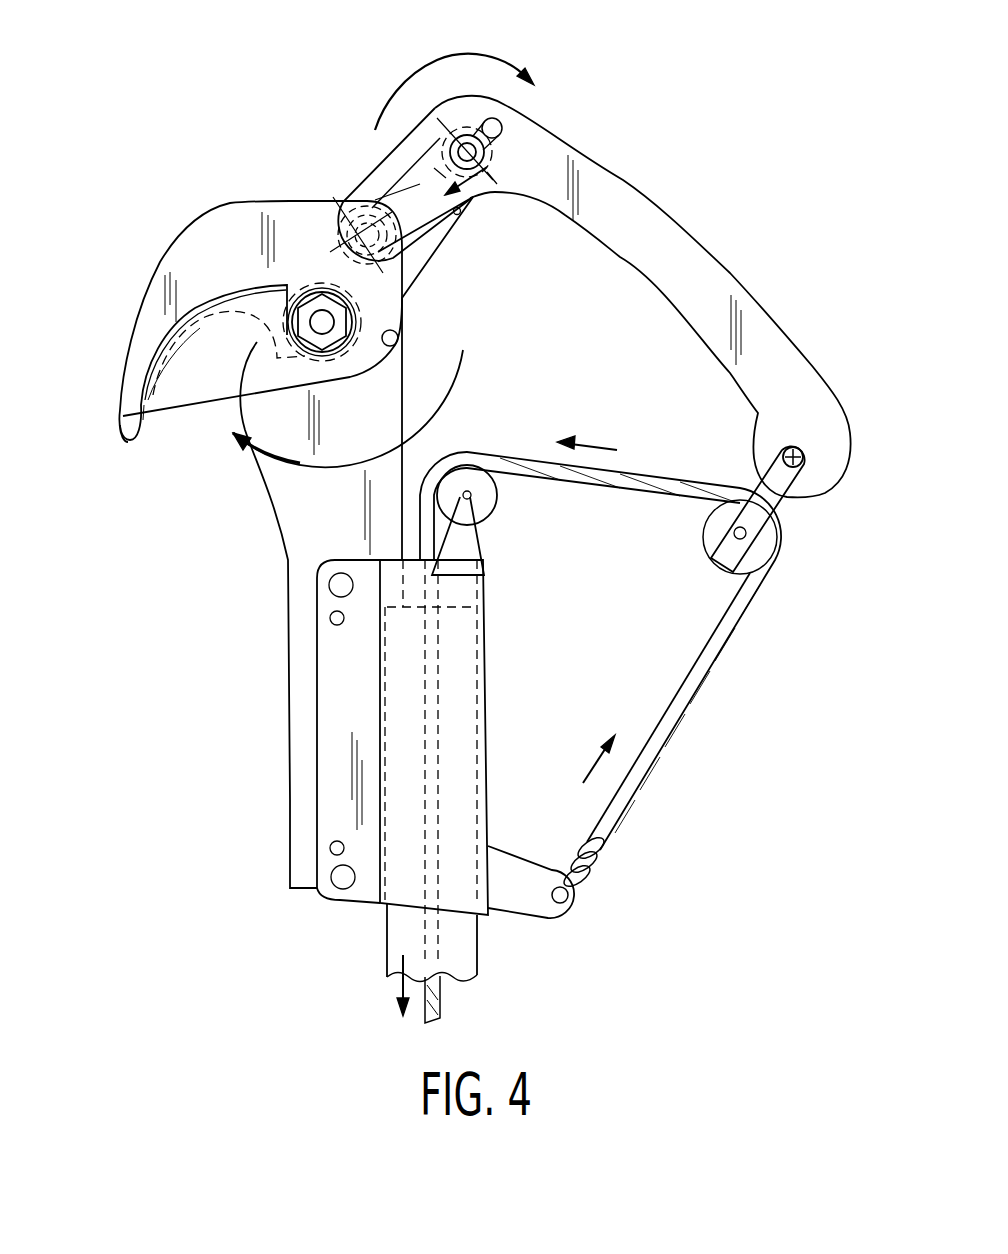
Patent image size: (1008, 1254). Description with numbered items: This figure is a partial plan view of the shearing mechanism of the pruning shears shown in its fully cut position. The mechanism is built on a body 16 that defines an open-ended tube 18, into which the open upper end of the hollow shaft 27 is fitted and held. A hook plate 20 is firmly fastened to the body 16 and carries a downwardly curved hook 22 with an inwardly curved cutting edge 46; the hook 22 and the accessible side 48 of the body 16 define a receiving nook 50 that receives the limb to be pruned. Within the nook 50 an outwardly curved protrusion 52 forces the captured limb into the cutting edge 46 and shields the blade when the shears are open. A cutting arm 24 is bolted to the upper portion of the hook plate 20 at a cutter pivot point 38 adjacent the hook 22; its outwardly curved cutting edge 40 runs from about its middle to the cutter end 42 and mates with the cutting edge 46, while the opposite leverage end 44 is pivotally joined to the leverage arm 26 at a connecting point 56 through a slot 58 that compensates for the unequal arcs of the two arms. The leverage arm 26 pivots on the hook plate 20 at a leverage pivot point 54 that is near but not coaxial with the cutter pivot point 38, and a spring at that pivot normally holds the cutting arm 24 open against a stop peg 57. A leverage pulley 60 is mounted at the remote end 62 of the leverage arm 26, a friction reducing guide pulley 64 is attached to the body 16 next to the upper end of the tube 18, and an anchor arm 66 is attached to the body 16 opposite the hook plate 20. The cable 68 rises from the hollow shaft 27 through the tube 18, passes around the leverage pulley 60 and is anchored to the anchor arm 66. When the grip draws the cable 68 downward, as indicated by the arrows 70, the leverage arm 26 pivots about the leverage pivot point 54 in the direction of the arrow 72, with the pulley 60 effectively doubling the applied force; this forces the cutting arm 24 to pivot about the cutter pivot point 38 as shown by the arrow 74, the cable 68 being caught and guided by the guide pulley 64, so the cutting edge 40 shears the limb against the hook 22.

The body 16 is at (327, 695).
The tube 18 is at (470, 687).
The hook plate 20 is at (303, 835).
The hook 22 is at (221, 279).
The cutting arm 24 is at (221, 386).
The leverage arm 26 is at (653, 203).
The hollow shaft 27 is at (387, 937).
The cutter pivot point 38 is at (340, 312).
The cutting edge 40 is at (152, 383).
The cutter end 42 is at (138, 407).
The leverage end 44 is at (497, 153).
The cutting edge 46 is at (127, 432).
The accessible side 48 is at (290, 760).
The receiving nook 50 is at (257, 273).
The protrusion 52 is at (265, 410).
The leverage pivot point 54 is at (350, 227).
The connecting point 56 is at (477, 190).
The stop peg 57 is at (400, 334).
The slot 58 is at (500, 143).
The leverage pulley 60 is at (760, 541).
The remote end 62 is at (853, 450).
The guide pulley 64 is at (490, 500).
The anchor arm 66 is at (513, 913).
The cable 68 is at (700, 683).
The arrows 70 is at (588, 440).
The arrow 72 is at (417, 66).
The arrow 74 is at (463, 357).